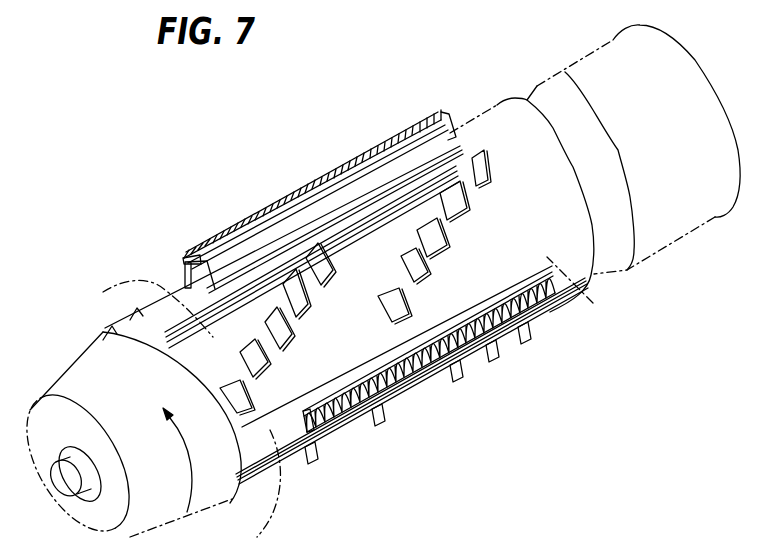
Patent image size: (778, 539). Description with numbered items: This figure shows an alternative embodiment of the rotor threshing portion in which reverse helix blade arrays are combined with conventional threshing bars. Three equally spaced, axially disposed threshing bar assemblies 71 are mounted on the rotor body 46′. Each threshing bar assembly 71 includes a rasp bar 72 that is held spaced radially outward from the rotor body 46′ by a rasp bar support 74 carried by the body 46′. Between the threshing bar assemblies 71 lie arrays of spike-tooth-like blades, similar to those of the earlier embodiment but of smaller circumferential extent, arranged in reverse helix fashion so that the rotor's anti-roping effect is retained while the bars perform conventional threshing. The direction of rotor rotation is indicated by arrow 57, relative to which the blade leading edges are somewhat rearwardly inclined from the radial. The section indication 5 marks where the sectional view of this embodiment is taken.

The threshing bar assembly 71 is at (283, 178).
The rasp bar 72 is at (270, 208).
The rasp bar support 74 is at (175, 268).
The rotor body 46′ is at (512, 220).
The arrow 57 is at (187, 472).
The section line 5- 5 is at (103, 292).